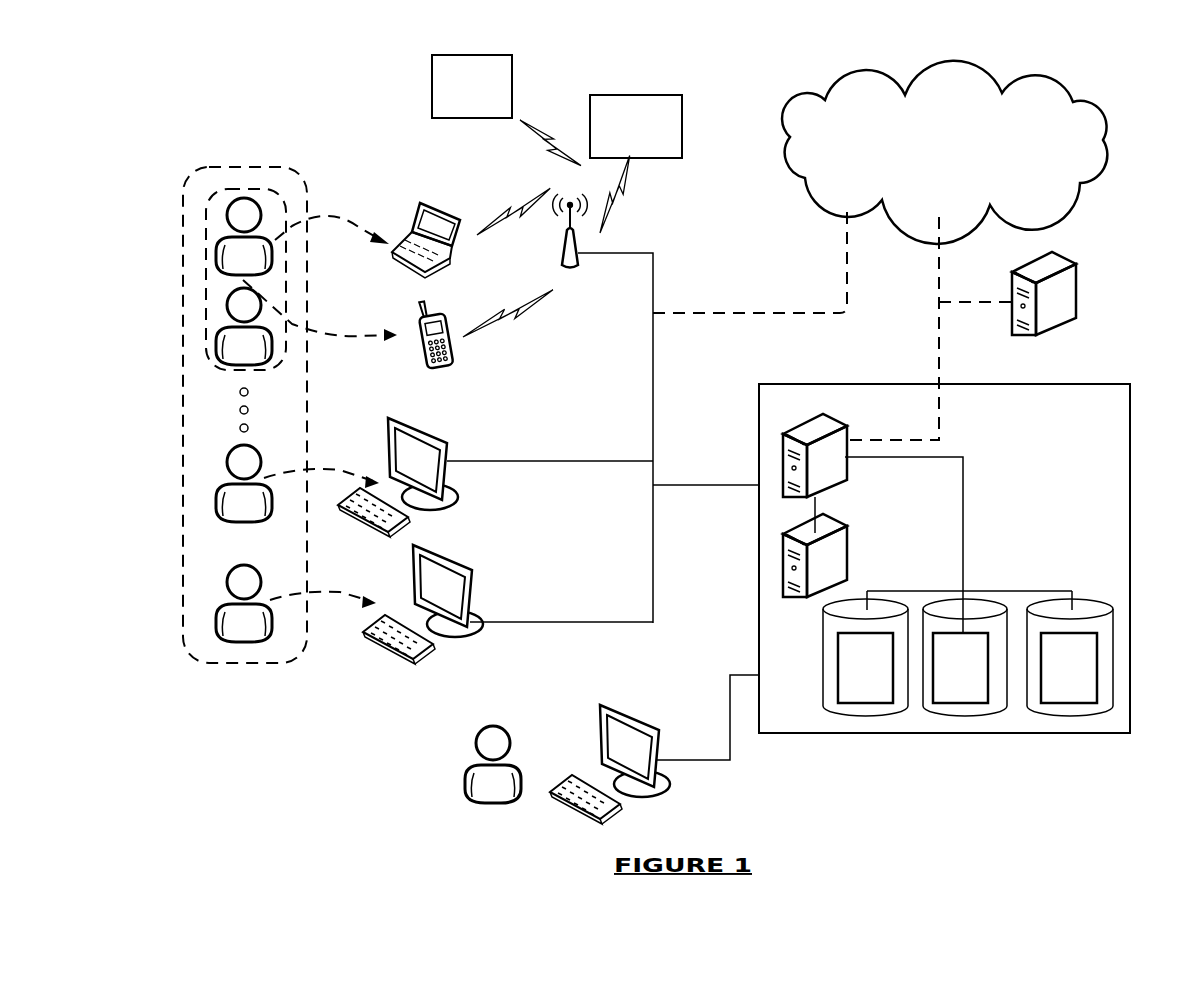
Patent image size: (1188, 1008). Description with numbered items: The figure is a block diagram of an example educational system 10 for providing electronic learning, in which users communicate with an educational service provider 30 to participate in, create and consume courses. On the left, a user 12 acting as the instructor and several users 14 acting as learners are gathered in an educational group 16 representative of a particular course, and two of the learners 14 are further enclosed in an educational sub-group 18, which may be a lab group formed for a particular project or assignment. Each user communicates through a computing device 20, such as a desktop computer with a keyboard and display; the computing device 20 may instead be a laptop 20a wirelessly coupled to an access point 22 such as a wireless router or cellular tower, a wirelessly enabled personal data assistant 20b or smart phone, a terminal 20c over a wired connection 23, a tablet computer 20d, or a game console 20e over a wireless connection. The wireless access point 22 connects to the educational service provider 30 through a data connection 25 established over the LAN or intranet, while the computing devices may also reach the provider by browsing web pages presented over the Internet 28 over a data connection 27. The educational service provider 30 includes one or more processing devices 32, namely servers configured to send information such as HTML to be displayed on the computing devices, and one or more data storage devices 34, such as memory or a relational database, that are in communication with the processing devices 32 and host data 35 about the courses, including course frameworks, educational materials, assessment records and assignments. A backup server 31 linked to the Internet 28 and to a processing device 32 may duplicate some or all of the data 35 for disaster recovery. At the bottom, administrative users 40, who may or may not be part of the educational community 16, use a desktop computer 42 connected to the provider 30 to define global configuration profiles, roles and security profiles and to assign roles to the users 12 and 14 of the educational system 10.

The educational system 10 is at (315, 92).
The user 12 is at (217, 614).
The users 14 is at (217, 251).
The educational group 16 is at (183, 548).
The educational sub-group 18 is at (275, 190).
The computing device 20 is at (470, 603).
The laptop 20a is at (435, 205).
The personal data assistant 20b is at (437, 315).
The terminal 20c is at (450, 500).
The tablet computer 20d is at (432, 85).
The game console 20e is at (640, 95).
The access point 22 is at (573, 268).
The wired connection 23 is at (551, 461).
The data connection 25 is at (725, 485).
The data connection 27 is at (780, 313).
The Internet 28 is at (792, 124).
The educational service provider 30 is at (779, 384).
The backup server 31 is at (1063, 258).
The processing device 32 is at (835, 425).
The data storage device 34 is at (980, 603).
The data 35 is at (1098, 667).
The user 40 is at (468, 762).
The desktop computer 42 is at (667, 785).